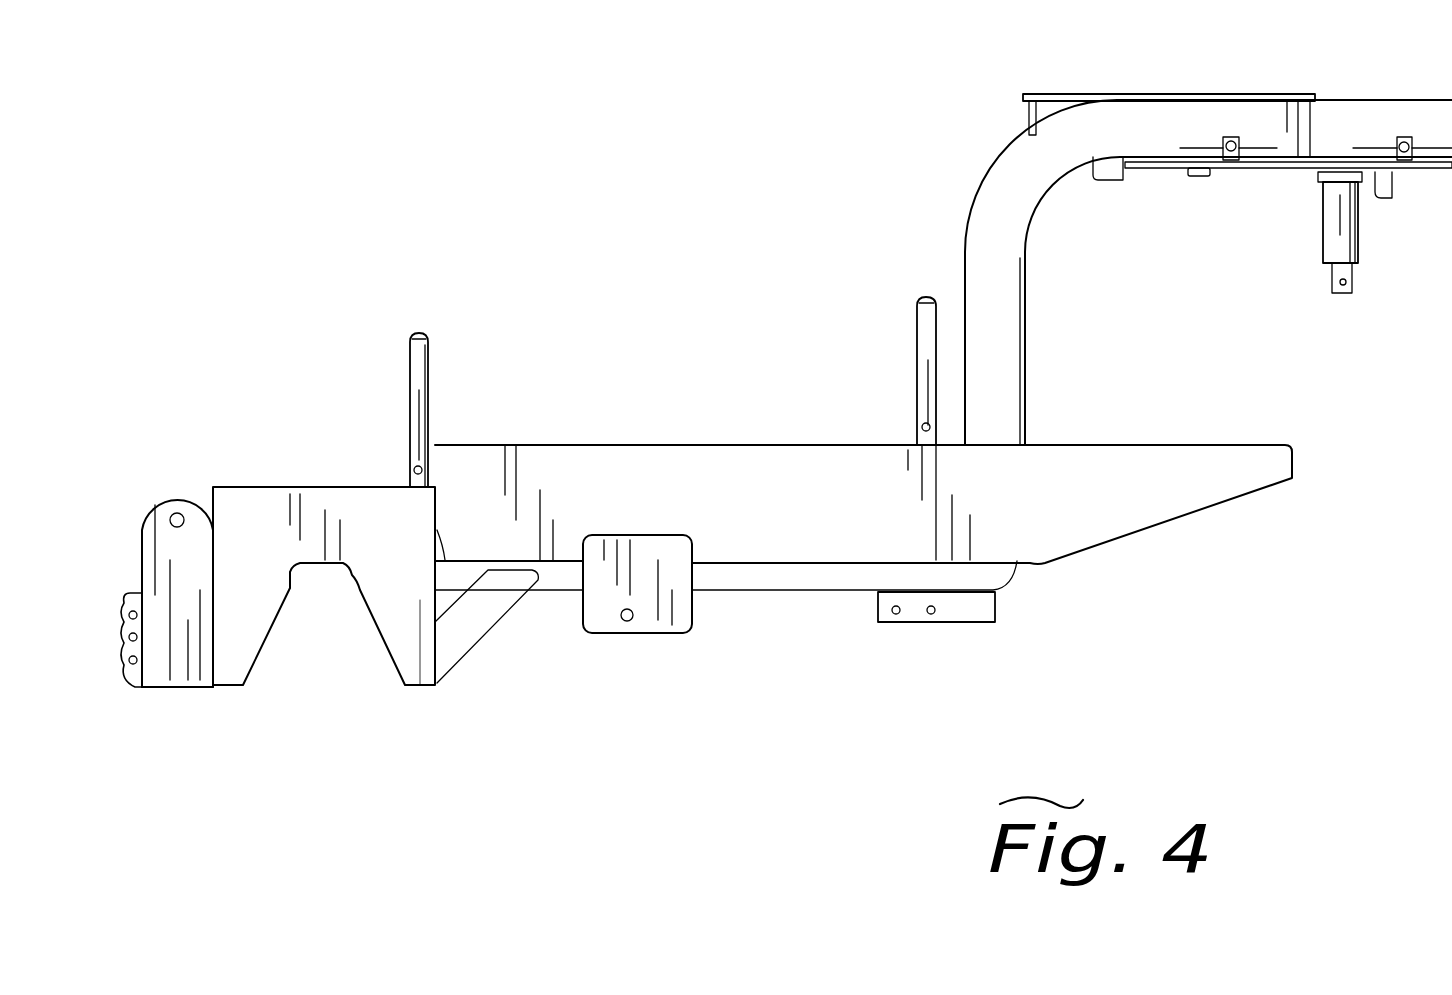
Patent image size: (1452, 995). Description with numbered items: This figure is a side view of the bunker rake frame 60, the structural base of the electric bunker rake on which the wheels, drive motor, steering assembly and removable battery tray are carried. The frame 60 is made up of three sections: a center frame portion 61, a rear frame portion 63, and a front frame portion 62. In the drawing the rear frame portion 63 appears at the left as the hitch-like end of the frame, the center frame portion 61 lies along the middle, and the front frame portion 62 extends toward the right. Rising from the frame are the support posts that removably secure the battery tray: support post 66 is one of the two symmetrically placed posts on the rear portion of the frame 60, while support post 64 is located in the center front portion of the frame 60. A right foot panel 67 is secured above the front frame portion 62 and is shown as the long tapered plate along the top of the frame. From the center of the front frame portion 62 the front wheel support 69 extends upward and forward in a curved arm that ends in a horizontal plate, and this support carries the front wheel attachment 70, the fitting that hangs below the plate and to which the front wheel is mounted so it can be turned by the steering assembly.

The bunker rake frame 60 is at (716, 287).
The center frame portion 61 is at (627, 640).
The front frame portion 62 is at (987, 612).
The rear frame portion 63 is at (185, 505).
The support post 64 is at (917, 355).
The support post 66 is at (420, 362).
The right foot panel 67 is at (1116, 502).
The front wheel support 69 is at (1240, 95).
The front wheel attachment 70 is at (1320, 233).